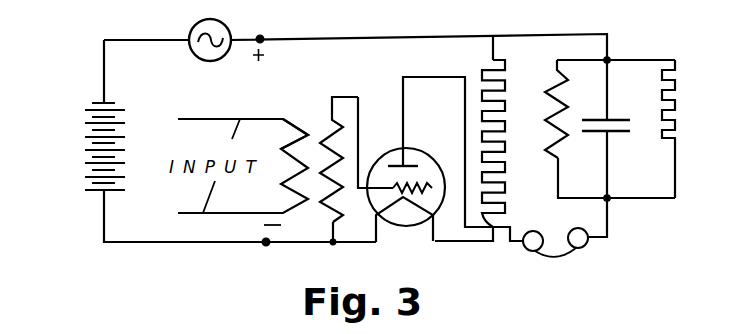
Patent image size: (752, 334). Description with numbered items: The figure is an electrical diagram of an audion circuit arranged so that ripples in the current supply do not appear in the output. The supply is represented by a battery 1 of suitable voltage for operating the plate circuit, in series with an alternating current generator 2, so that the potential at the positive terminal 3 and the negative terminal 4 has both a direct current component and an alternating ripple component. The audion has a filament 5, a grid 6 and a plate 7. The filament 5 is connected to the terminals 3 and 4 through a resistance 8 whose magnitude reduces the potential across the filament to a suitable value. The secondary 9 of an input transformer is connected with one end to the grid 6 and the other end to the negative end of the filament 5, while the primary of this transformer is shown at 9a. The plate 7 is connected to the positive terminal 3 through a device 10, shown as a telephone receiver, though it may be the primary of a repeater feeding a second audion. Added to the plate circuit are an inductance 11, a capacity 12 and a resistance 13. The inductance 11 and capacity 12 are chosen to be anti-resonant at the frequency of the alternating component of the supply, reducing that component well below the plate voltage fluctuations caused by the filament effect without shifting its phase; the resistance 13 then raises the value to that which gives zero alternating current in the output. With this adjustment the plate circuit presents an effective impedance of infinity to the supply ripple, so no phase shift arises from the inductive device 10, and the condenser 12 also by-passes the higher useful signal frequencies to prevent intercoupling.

The battery 1 is at (85, 131).
The alternating current generator 2 is at (248, 17).
The positive terminal 3 is at (263, 37).
The negative terminal 4 is at (267, 244).
The filament 5 is at (412, 207).
The grid 6 is at (390, 175).
The plate 7 is at (417, 165).
The resistance 8 is at (508, 149).
The secondary of input transformer 9 is at (328, 127).
The primary of input transformer 9a is at (295, 139).
The device (telephone receiver) 10 is at (581, 250).
The inductance 11 is at (551, 85).
The capacity (condenser) 12 is at (612, 135).
The resistance 13 is at (718, 98).